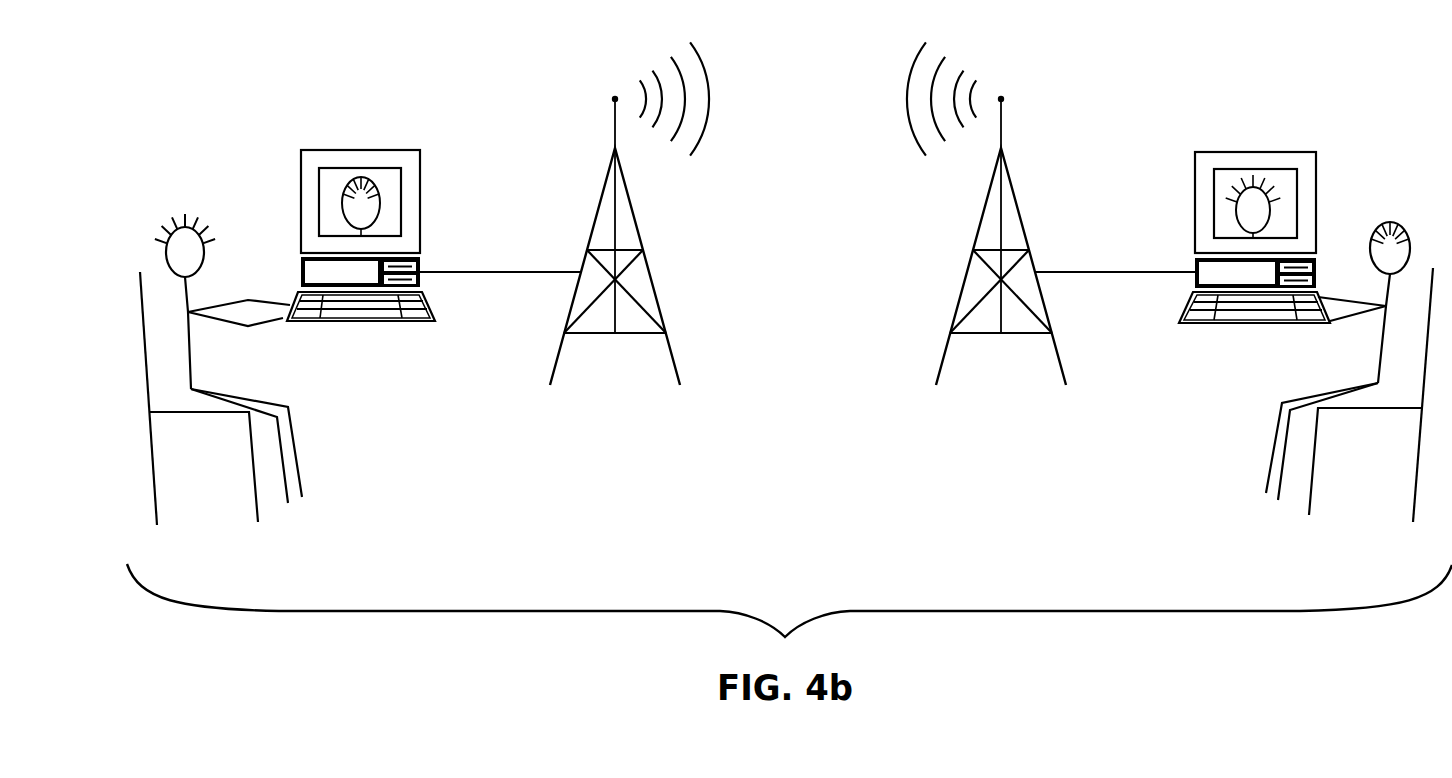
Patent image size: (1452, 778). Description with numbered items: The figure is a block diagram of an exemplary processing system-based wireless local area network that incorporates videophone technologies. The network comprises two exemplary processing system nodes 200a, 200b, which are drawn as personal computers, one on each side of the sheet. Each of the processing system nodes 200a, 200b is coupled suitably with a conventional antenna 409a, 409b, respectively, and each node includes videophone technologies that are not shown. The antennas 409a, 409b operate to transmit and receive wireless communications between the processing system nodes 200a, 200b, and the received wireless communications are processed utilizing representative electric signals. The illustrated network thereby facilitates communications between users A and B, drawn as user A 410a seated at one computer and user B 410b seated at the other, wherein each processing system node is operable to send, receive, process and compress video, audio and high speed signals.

The processing system node 200a is at (353, 150).
The processing system node 200b is at (1259, 151).
The antenna 409a is at (648, 268).
The antenna 409b is at (966, 270).
The user A 410a is at (185, 225).
The user B 410b is at (1390, 222).